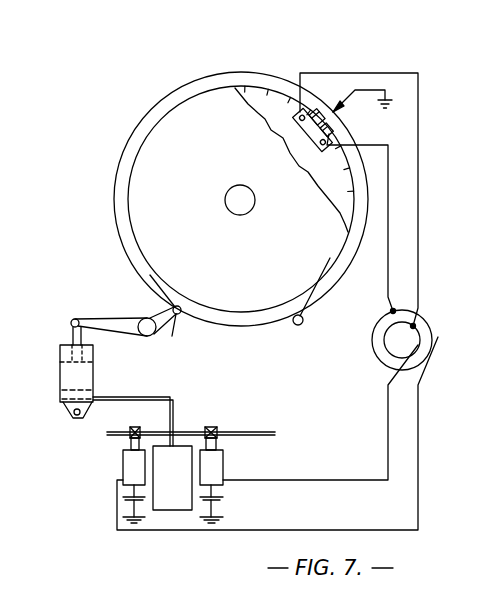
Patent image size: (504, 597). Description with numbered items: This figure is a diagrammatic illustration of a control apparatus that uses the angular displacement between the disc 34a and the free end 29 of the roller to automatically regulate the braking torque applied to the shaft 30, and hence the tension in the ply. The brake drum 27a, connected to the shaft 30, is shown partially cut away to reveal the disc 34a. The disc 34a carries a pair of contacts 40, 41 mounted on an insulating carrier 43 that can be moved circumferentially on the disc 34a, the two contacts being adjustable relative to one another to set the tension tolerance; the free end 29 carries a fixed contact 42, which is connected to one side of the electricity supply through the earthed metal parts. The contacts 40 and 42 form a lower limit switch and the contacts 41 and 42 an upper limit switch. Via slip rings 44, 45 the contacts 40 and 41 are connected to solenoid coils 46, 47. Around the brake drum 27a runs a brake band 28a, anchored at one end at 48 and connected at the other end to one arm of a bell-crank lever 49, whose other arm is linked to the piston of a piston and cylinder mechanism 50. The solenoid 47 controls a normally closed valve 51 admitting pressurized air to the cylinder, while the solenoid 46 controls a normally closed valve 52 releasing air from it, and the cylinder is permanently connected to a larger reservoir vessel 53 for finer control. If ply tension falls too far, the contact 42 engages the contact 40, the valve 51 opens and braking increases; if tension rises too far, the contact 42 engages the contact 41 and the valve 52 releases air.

The brake drum 27a is at (246, 320).
The brake band 28a is at (170, 309).
The free end 29 is at (283, 78).
The shaft 30 is at (226, 200).
The disc 34a is at (259, 101).
The contact 40 is at (312, 108).
The contact 41 is at (333, 128).
The fixed contact 42 is at (345, 112).
The insulating carrier 43 is at (308, 132).
The slip ring 44 is at (395, 345).
The slip ring 45 is at (378, 325).
The solenoid coil 46 is at (130, 463).
The solenoid coil 47 is at (215, 468).
The anchor 48 is at (295, 324).
The bell-crank lever 49 is at (179, 314).
The piston and cylinder mechanism 50 is at (60, 370).
The normally closed valve 51 is at (212, 427).
The normally closed valve 52 is at (135, 427).
The reservoir vessel 53 is at (173, 500).